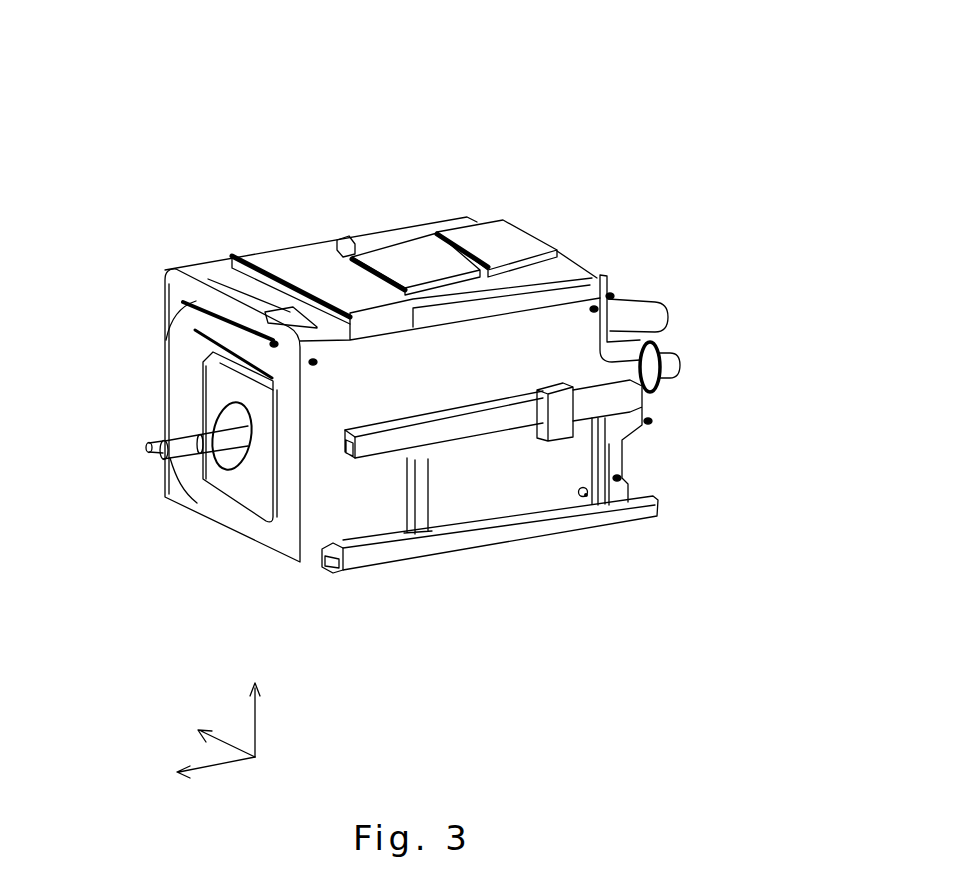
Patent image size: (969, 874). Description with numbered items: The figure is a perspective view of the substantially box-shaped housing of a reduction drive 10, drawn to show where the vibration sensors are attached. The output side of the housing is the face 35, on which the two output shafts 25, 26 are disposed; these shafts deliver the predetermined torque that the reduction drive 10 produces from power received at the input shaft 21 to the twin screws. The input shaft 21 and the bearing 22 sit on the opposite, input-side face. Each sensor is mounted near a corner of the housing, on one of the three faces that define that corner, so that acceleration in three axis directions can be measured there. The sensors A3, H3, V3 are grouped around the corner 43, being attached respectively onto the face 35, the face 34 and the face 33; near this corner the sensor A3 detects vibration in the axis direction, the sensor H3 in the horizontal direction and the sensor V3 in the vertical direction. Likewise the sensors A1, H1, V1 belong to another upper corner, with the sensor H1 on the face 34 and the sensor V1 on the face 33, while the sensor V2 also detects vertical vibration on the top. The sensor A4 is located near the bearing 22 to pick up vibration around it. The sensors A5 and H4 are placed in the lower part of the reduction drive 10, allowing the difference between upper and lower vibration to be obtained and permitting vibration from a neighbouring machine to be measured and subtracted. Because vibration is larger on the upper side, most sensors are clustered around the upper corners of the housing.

The reduction drive 10 is at (593, 83).
The face 33 is at (208, 262).
The corner 43 is at (300, 328).
The face 35 is at (227, 518).
The output shaft 25 is at (149, 446).
The output shaft 26 is at (163, 456).
The face 34 is at (328, 523).
The input shaft 21 is at (658, 307).
The bearing 22 is at (675, 365).
The sensor V1 is at (575, 278).
The sensor V2 is at (465, 221).
The sensor V3 is at (295, 323).
The sensor H1 is at (592, 300).
The sensor H3 is at (312, 362).
The sensor H4 is at (583, 497).
The sensor A1 is at (613, 294).
The sensor A3 is at (273, 344).
The sensor A4 is at (650, 419).
The sensor A5 is at (620, 478).